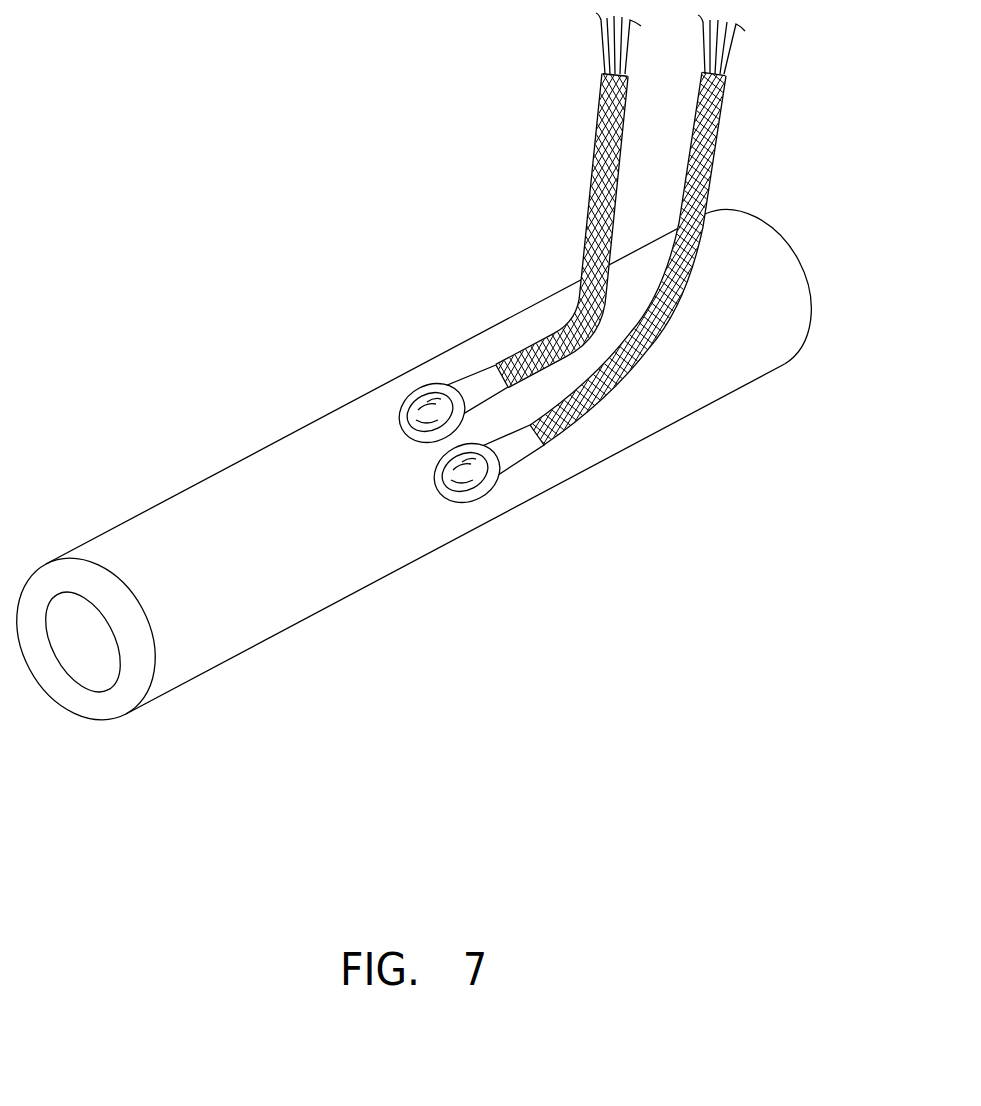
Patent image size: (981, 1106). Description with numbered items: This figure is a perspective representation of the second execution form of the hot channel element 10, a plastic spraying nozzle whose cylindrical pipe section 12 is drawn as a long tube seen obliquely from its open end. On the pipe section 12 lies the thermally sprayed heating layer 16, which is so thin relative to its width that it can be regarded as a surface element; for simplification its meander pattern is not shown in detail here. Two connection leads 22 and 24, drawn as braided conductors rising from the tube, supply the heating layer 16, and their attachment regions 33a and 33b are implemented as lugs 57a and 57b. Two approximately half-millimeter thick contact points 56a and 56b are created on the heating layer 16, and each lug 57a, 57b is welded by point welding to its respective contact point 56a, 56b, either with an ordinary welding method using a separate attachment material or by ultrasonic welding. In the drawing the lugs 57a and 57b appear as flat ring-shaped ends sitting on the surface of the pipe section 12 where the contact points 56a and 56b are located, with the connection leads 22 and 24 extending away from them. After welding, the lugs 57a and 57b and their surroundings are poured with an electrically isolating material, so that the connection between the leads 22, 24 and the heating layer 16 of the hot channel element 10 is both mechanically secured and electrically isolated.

The hot channel element 10 is at (235, 147).
The pipe section 12 is at (310, 435).
The heating layer 16 is at (343, 568).
The connection lead 22 is at (594, 157).
The connection lead 24 is at (717, 130).
The attachment region 33a is at (512, 476).
The attachment region 33b is at (453, 382).
The contact point 56a is at (460, 502).
The contact point 56b is at (423, 387).
The lug 57a is at (478, 500).
The lug 57b is at (410, 422).